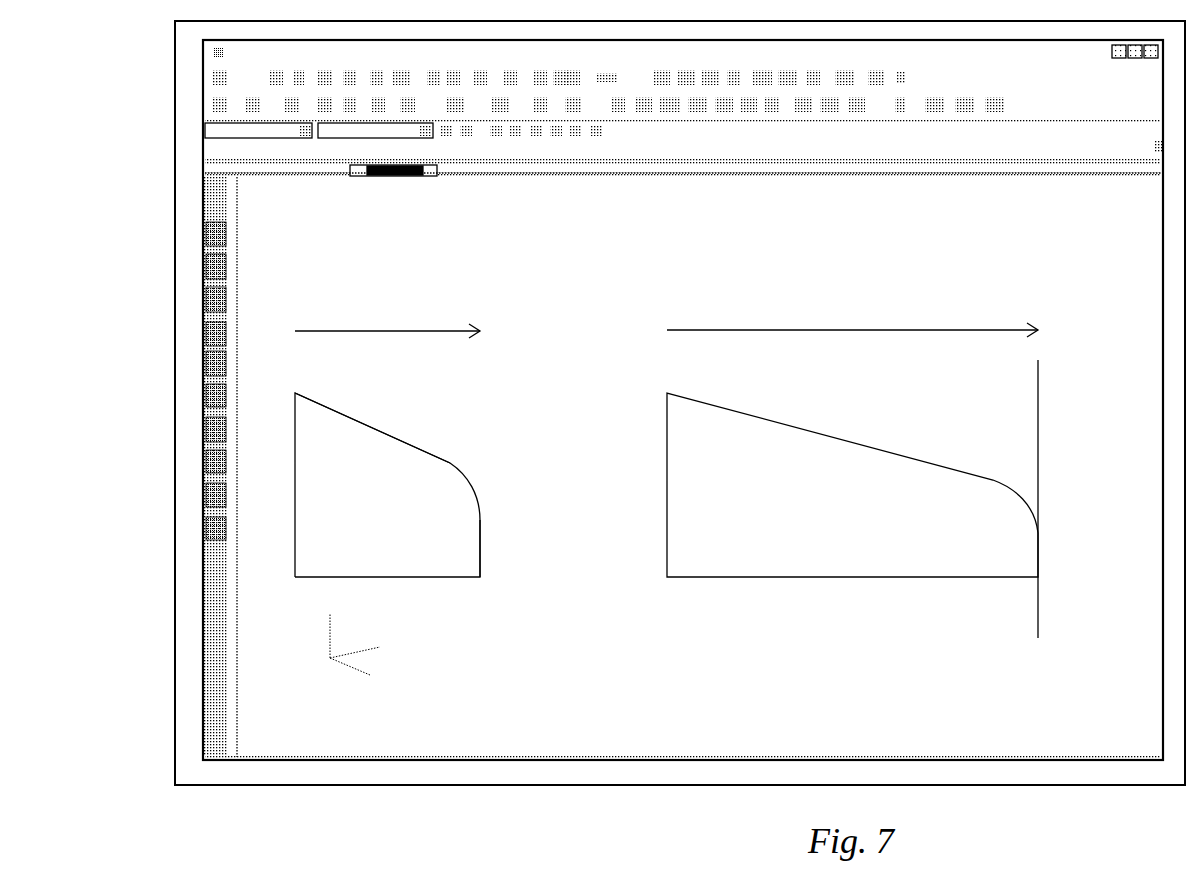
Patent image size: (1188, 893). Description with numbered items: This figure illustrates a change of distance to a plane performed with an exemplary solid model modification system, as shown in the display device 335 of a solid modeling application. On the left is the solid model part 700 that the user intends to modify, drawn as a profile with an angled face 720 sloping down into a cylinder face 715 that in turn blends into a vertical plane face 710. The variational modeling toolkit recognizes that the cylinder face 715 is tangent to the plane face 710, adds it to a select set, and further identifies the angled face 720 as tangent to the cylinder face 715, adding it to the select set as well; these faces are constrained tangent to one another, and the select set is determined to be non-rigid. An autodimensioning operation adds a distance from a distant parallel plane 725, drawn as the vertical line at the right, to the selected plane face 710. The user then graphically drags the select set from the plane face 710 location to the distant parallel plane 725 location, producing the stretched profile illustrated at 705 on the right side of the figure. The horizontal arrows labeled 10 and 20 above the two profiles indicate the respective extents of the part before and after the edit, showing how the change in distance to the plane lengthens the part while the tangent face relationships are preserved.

The display device 335 is at (684, 797).
The first direction arrow 10 is at (387, 313).
The second direction arrow 20 is at (852, 313).
The solid model part 700 is at (450, 579).
The position of dragged edit portion 705 is at (802, 579).
The plane face 710 is at (483, 547).
The cylinder face 715 is at (473, 486).
The angled face 720 is at (432, 452).
The distant parallel plane 725 is at (1052, 503).